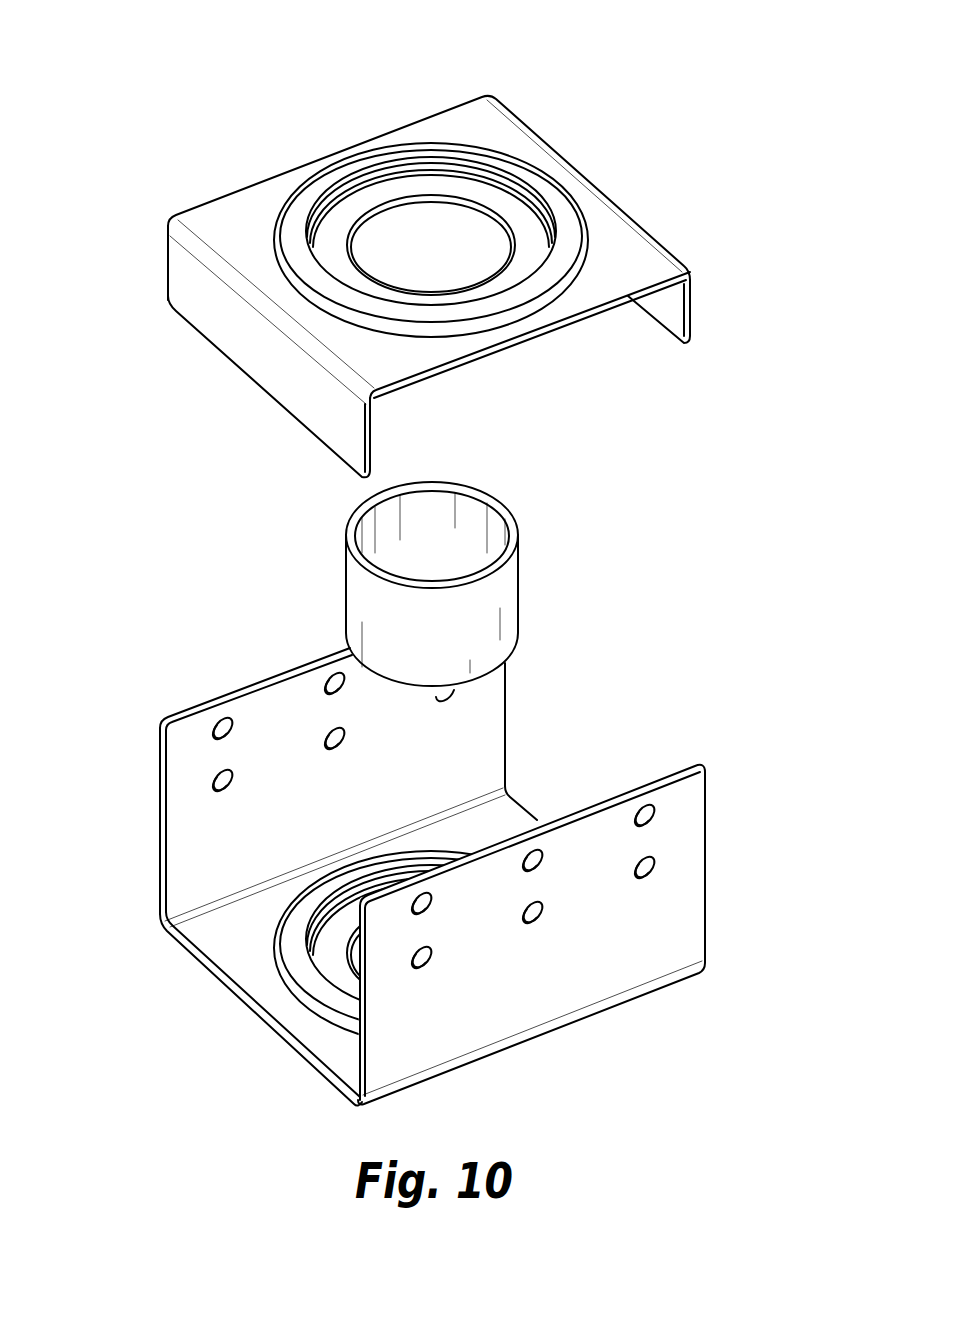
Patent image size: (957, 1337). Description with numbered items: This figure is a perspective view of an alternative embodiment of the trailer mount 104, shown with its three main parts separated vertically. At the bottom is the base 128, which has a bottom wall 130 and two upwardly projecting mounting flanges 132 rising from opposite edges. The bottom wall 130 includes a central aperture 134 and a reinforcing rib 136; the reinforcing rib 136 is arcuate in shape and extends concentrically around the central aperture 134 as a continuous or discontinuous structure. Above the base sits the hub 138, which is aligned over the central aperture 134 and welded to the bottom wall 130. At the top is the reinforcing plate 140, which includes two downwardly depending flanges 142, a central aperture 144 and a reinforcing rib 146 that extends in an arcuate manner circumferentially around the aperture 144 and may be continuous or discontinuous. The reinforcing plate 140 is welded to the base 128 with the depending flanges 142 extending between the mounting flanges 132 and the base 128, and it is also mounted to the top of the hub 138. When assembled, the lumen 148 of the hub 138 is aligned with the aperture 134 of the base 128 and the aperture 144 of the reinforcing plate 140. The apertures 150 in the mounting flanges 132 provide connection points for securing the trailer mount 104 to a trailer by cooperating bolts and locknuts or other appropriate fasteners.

The trailer mount 104 is at (768, 384).
The base 128 is at (740, 838).
The bottom wall 130 is at (250, 970).
The mounting flanges 132 is at (183, 757).
The central aperture 134 is at (362, 950).
The reinforcing rib 136 is at (453, 843).
The hub 138 is at (508, 585).
The reinforcing plate 140 is at (606, 228).
The depending flanges 142 is at (225, 335).
The central aperture 144 is at (395, 238).
The reinforcing rib 146 is at (455, 148).
The lumen 148 is at (389, 540).
The apertures 150 is at (327, 688).